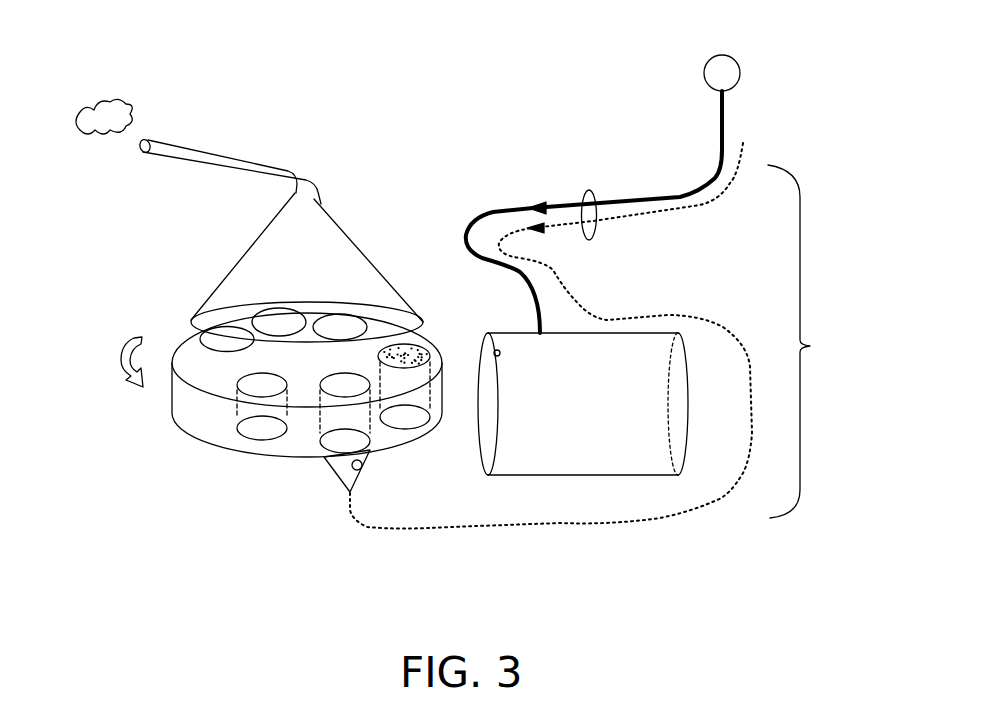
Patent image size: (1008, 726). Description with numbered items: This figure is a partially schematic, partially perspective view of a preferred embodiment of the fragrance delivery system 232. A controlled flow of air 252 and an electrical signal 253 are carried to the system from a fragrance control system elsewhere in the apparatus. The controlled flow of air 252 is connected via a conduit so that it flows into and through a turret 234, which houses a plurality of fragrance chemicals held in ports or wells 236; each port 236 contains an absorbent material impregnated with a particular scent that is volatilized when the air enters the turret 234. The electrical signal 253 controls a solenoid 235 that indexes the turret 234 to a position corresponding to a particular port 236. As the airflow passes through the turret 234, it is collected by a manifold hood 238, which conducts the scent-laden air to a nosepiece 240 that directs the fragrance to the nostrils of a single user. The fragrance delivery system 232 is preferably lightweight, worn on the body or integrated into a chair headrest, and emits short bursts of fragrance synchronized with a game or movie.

The fragrance delivery system 232 is at (820, 341).
The turret 234 is at (233, 448).
The solenoid 235 is at (547, 452).
The port 236 is at (270, 382).
The manifold hood 238 is at (305, 225).
The nosepiece 240 is at (221, 153).
The controlled flow of air 252 is at (743, 143).
The electrical signal 253 is at (718, 155).